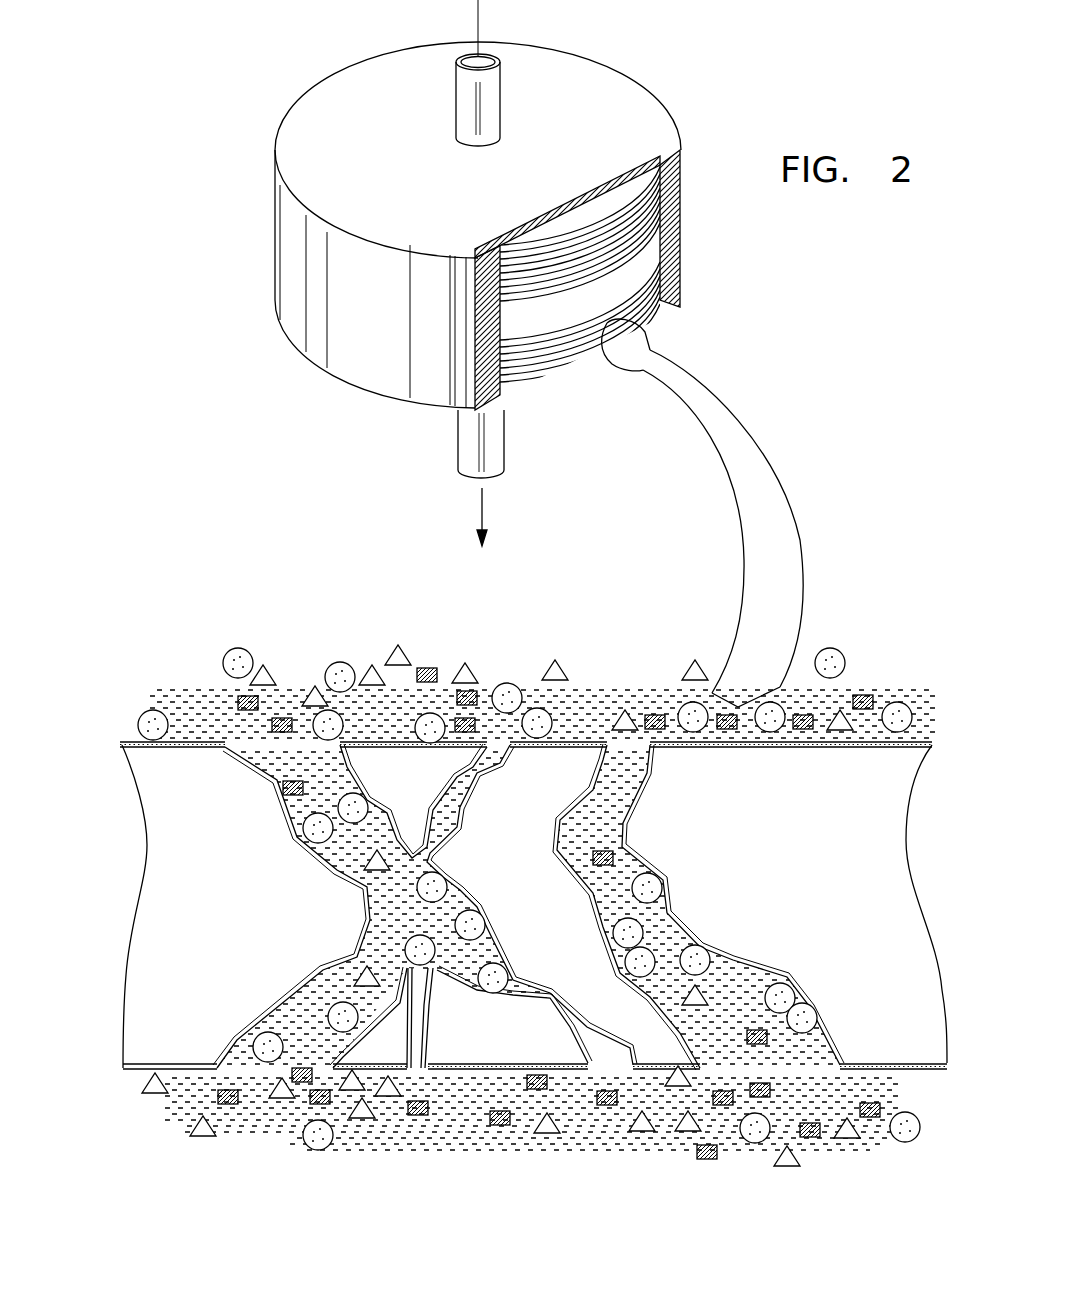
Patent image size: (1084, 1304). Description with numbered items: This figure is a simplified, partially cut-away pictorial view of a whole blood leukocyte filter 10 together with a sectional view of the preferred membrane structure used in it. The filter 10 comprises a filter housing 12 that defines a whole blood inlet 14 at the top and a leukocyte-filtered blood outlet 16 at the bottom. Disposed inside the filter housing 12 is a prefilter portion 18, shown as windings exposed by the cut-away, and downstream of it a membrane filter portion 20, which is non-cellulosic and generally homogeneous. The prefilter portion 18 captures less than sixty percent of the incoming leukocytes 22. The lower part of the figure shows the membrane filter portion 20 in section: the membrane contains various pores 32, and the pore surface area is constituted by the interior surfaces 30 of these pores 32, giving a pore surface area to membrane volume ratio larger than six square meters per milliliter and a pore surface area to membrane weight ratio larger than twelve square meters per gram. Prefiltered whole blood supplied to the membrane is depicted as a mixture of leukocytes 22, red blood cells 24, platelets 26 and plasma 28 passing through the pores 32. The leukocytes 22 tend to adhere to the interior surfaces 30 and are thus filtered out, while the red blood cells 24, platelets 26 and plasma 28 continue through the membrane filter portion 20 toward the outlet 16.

The whole blood leukocyte filter 10 is at (692, 220).
The filter housing 12 is at (680, 178).
The whole blood inlet 14 is at (492, 90).
The leukocyte-filtered blood outlet 16 is at (468, 438).
The prefilter portion 18 is at (605, 232).
The membrane filter portion 20 is at (647, 332).
The leukocytes 22 is at (316, 1142).
The red blood cells 24 is at (293, 567).
The platelets 26 is at (427, 580).
The plasma 28 is at (453, 1122).
The interior surfaces 30 is at (250, 767).
The pores 32 is at (488, 748).